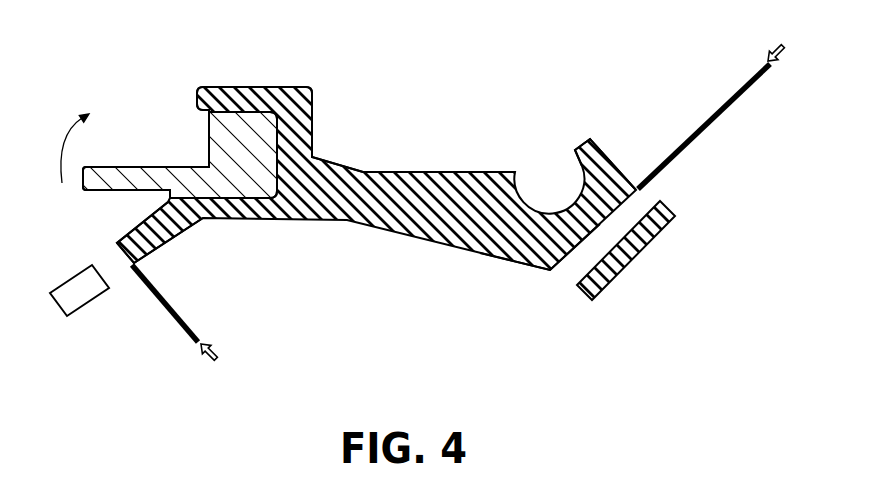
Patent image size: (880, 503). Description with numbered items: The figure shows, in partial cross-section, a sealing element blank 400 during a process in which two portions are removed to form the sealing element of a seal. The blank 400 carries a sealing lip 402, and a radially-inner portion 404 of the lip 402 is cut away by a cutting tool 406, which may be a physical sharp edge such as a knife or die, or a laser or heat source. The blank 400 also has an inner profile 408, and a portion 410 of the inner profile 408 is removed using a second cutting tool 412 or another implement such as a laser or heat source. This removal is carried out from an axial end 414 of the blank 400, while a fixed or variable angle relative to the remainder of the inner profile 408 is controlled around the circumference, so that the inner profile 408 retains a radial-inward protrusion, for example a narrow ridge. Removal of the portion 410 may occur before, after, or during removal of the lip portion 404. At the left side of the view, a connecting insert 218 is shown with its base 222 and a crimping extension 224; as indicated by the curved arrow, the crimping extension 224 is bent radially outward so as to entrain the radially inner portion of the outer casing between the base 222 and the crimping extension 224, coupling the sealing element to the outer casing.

The connecting insert 218 is at (287, 138).
The base 222 is at (220, 138).
The crimping extension 224 is at (125, 193).
The sealing element blank 400 is at (438, 183).
The sealing lip 402 is at (175, 237).
The radially-inner portion 404 is at (84, 296).
The cutting tool 406 is at (187, 317).
The inner profile 408 is at (539, 255).
The portion of the inner profile 410 is at (657, 227).
The cutting tool 412 is at (730, 97).
The axial end 414 is at (627, 197).